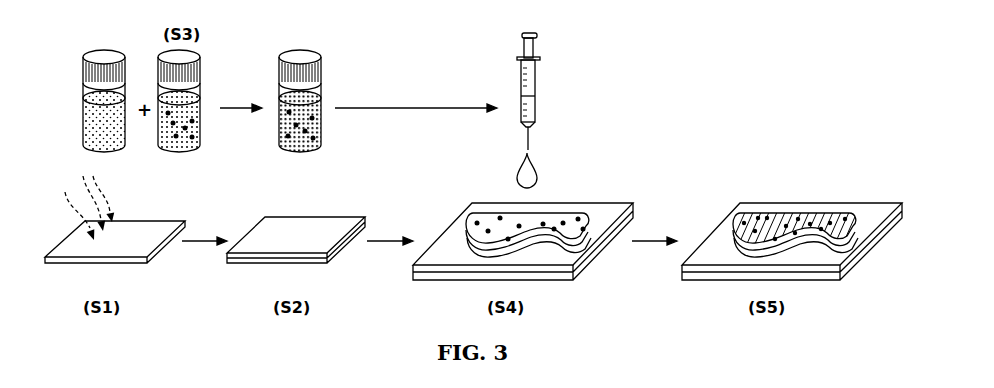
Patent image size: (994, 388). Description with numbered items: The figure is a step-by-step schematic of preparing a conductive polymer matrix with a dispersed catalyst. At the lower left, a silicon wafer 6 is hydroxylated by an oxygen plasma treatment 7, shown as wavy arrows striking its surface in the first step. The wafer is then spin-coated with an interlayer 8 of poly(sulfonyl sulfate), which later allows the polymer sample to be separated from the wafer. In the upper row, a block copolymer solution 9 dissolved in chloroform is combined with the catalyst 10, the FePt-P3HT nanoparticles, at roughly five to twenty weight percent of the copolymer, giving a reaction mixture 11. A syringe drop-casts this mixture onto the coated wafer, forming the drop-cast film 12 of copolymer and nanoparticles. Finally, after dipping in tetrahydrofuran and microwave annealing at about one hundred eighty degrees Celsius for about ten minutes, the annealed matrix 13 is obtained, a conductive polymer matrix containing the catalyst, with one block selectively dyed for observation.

The substrate 6 is at (156, 266).
The surface treatment (plasma) 7 is at (89, 202).
The coating layer 8 is at (309, 204).
The first solution (hydrogel precursor) 9 is at (128, 130).
The second solution (cells) 10 is at (213, 128).
The mixed bioink solution 11 is at (333, 131).
The dispensed bioink pattern 12 is at (557, 205).
The crosslinked cell scaffold structure 13 is at (772, 195).